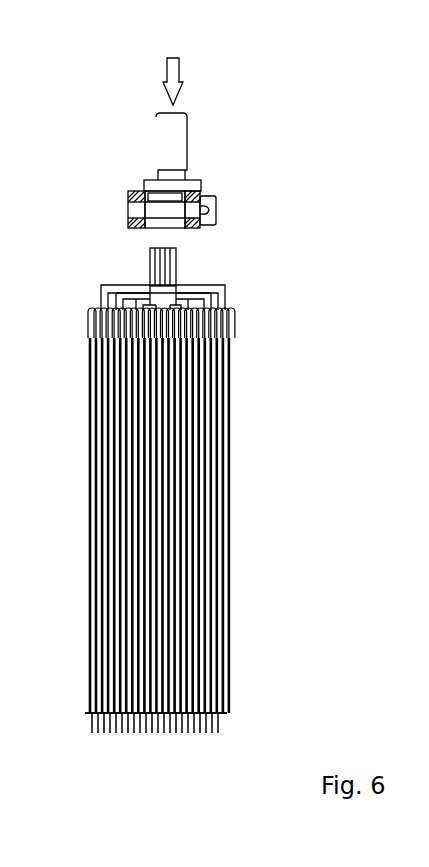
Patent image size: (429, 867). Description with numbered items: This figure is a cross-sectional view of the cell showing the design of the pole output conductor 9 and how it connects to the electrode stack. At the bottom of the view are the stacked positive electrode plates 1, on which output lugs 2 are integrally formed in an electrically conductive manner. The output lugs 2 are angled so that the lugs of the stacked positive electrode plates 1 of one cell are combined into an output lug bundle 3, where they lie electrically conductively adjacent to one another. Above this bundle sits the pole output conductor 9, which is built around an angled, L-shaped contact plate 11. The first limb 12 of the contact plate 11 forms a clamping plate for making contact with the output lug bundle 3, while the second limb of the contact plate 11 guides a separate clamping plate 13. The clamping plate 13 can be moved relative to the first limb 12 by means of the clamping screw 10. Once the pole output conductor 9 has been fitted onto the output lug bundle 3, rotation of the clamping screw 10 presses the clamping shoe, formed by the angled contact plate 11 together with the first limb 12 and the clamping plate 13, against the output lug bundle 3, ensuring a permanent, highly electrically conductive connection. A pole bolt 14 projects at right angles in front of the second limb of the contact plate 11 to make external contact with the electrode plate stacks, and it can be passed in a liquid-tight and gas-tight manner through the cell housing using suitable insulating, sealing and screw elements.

The positive electrode plates 1 is at (152, 640).
The output lugs 2 is at (211, 280).
The output lug bundle 3 is at (168, 253).
The pole output conductor 9 is at (112, 92).
The clamping screw 10 is at (208, 197).
The contact plate 11 is at (142, 170).
The first limb 12 is at (178, 187).
The clamping plate 13 is at (129, 187).
The pole bolt 14 is at (179, 117).